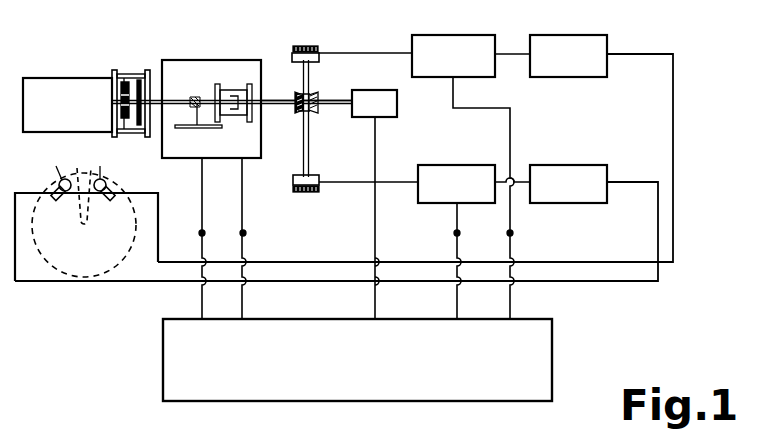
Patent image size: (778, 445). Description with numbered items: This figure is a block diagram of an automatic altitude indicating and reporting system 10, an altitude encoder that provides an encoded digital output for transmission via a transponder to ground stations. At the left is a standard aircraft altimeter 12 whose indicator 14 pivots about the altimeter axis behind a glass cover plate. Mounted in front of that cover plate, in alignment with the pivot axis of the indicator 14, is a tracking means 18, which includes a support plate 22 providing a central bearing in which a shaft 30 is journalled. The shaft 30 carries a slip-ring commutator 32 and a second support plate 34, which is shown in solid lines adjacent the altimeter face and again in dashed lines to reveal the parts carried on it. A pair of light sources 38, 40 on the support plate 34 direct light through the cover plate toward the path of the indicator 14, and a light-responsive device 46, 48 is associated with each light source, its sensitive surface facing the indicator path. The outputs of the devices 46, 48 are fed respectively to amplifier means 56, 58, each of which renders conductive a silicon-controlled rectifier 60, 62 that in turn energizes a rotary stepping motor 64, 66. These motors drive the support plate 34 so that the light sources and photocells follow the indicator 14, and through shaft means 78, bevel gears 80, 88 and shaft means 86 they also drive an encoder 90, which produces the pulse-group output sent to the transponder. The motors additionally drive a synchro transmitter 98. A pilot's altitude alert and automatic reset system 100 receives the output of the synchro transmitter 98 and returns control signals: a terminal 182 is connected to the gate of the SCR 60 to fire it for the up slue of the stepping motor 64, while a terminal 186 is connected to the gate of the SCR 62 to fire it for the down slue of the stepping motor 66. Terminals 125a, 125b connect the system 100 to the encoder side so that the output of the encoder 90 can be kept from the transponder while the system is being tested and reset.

The automatic altitude indicating and reporting system 10 is at (229, 55).
The aircraft altimeter 12 is at (75, 90).
The indicator 14 is at (76, 179).
The tracking means 18 is at (125, 70).
The support plate 22 is at (150, 133).
The shaft 30 is at (177, 99).
The slip-ring commutator 32 is at (136, 76).
The support plate 34 is at (130, 137).
The light source 38 is at (100, 161).
The light source 40 is at (52, 162).
The light-responsive device 46 is at (107, 188).
The light-responsive device 48 is at (58, 189).
The amplifier means 56 is at (568, 78).
The amplifier means 58 is at (570, 164).
The silicon-controlled rectifier 60 is at (440, 78).
The silicon-controlled rectifier 62 is at (445, 164).
The rotary stepping motor 64 is at (321, 57).
The rotary stepping motor 66 is at (319, 180).
The shaft means 78 is at (299, 151).
The bevel gear 80 is at (300, 95).
The shaft means 86 is at (282, 106).
The bevel gear 88 is at (300, 112).
The encoder 90 is at (245, 58).
The synchro transmitter 98 is at (375, 93).
The pilot's altitude alert and automatic reset system 100 is at (553, 344).
The terminal 125a is at (200, 233).
The terminal 125b is at (245, 233).
The terminal 182 is at (512, 232).
The terminal 186 is at (455, 232).